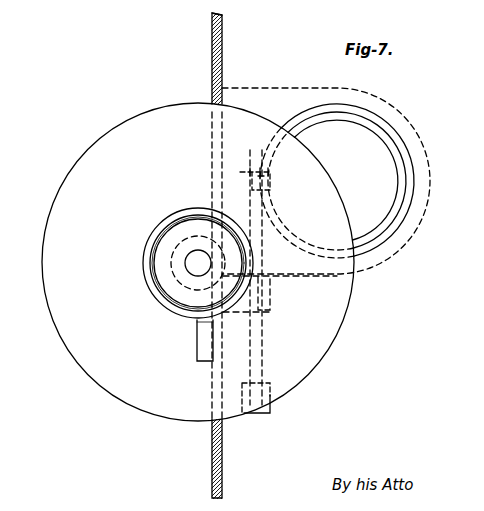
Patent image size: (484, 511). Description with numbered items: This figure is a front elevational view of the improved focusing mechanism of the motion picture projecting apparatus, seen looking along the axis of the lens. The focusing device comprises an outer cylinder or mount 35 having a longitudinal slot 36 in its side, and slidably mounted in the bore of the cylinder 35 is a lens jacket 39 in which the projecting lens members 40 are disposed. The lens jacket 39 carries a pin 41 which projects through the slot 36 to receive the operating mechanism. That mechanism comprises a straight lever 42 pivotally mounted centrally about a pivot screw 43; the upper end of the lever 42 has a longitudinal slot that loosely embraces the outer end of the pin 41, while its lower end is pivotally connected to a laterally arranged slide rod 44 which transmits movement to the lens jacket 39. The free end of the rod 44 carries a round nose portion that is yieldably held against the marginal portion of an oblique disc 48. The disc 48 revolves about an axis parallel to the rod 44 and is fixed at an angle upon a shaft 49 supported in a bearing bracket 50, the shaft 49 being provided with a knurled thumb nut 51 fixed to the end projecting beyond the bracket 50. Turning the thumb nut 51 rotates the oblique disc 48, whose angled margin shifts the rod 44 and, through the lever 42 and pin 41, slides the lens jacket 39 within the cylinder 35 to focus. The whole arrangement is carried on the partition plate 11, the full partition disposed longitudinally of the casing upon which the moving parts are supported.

The partition plate 11 is at (222, 40).
The outer cylinder or mount 35 is at (302, 113).
The longitudinal slot 36 is at (271, 173).
The lens jacket 39 is at (400, 176).
The projecting lens members 40 is at (370, 156).
The pin 41 is at (251, 171).
The straight lever 42 is at (262, 345).
The pivot screw 43 is at (270, 309).
The slide rod 44 is at (245, 418).
The oblique disc 48 is at (74, 170).
The shaft 49 is at (195, 268).
The bearing bracket 50 is at (197, 353).
The knurled thumb nut 51 is at (174, 214).